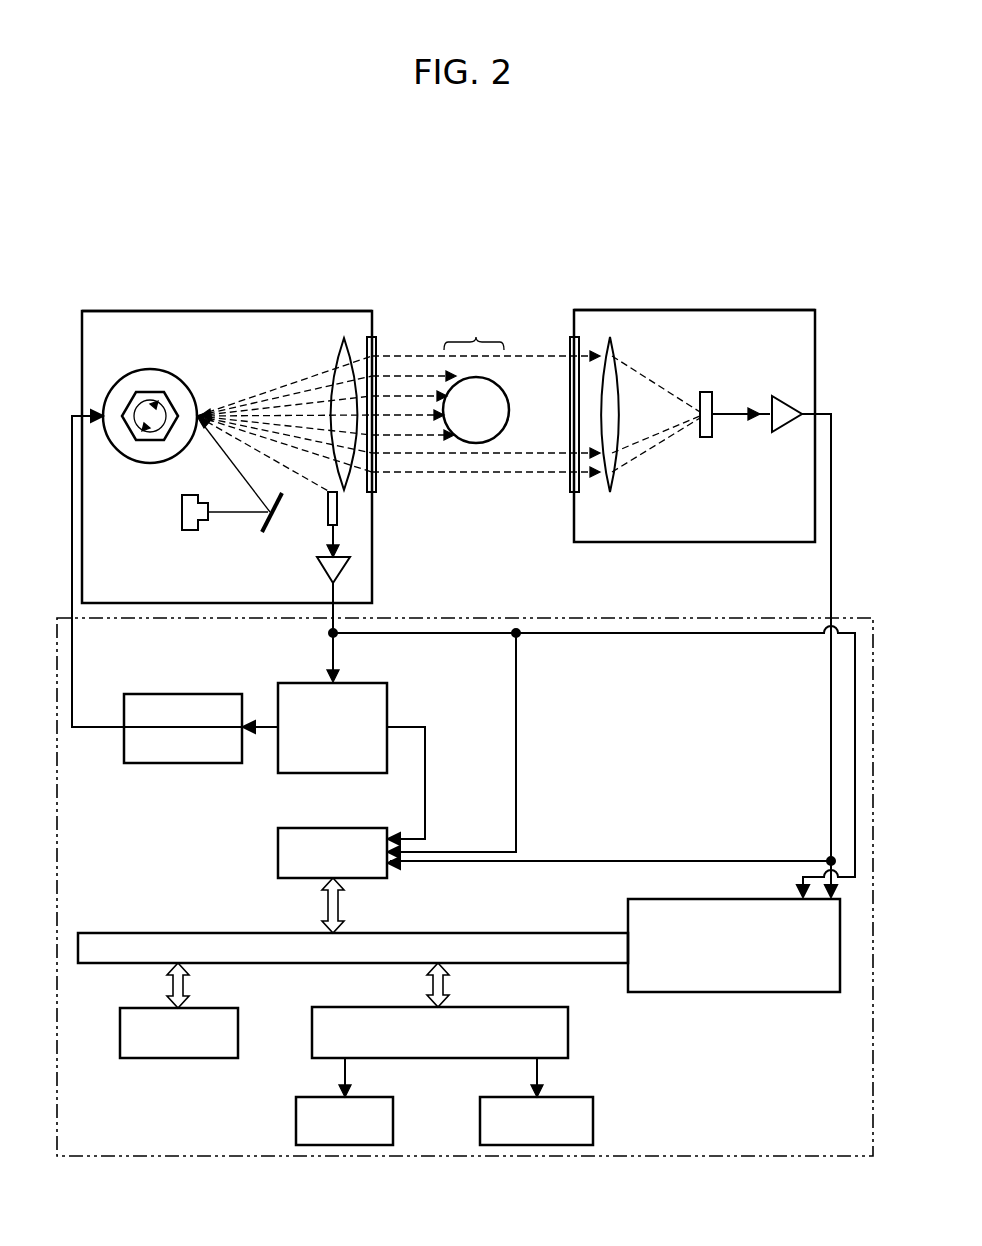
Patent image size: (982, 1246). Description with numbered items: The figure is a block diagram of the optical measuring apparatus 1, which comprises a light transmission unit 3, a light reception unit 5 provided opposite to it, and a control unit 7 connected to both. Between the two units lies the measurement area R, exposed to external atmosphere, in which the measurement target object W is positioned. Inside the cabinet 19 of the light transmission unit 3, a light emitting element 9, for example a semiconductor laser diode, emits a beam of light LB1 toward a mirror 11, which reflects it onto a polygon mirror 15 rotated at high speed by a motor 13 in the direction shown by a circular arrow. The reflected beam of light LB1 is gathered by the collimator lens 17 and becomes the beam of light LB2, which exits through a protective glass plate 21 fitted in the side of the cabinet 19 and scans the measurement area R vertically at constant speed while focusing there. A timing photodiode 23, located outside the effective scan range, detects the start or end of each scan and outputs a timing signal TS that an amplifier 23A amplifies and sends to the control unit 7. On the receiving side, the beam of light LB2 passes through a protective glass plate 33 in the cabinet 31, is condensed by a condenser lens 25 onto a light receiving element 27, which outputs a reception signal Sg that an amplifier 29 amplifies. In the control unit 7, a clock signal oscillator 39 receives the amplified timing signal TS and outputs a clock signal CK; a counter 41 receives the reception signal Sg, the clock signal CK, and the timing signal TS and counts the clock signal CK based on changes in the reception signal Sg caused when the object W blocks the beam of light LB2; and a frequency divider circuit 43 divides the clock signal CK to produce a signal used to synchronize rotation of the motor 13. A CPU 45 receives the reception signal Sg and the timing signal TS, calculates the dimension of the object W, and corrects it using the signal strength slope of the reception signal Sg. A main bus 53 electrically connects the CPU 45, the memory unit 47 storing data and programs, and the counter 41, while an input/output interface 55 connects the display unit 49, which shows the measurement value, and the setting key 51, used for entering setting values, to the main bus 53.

The optical measuring apparatus 1 is at (646, 175).
The light transmission unit 3 is at (142, 288).
The light reception unit 5 is at (746, 288).
The control unit 7 is at (850, 618).
The light emitting element 9 is at (182, 518).
The mirror 11 is at (274, 528).
The motor 13 is at (145, 370).
The polygon mirror 15 is at (164, 388).
The collimator lens 17 is at (334, 346).
The cabinet 19 is at (190, 310).
The protective glass plate 21 is at (382, 346).
The timing photodiode 23 is at (338, 505).
The amplifier 23A is at (350, 576).
The condenser lens 25 is at (610, 492).
The light receiving element 27 is at (706, 438).
The amplifier 29 is at (786, 434).
The cabinet 31 is at (640, 309).
The protective glass plate 33 is at (566, 344).
The clock signal oscillator 39 is at (312, 683).
The counter 41 is at (278, 852).
The frequency divider circuit 43 is at (176, 694).
The CPU 45 is at (676, 899).
The memory unit 47 is at (178, 1058).
The display unit 49 is at (393, 1106).
The setting key 51 is at (593, 1106).
The main bus 53 is at (374, 933).
The input/output interface 55 is at (342, 1007).
The beam of light LB1 is at (250, 390).
The beam of light LB2 is at (360, 336).
The measurement area R is at (474, 331).
The measurement target object W is at (514, 374).
The timing signal TS is at (338, 542).
The reception signal Sg is at (740, 412).
The clock signal CK is at (264, 734).